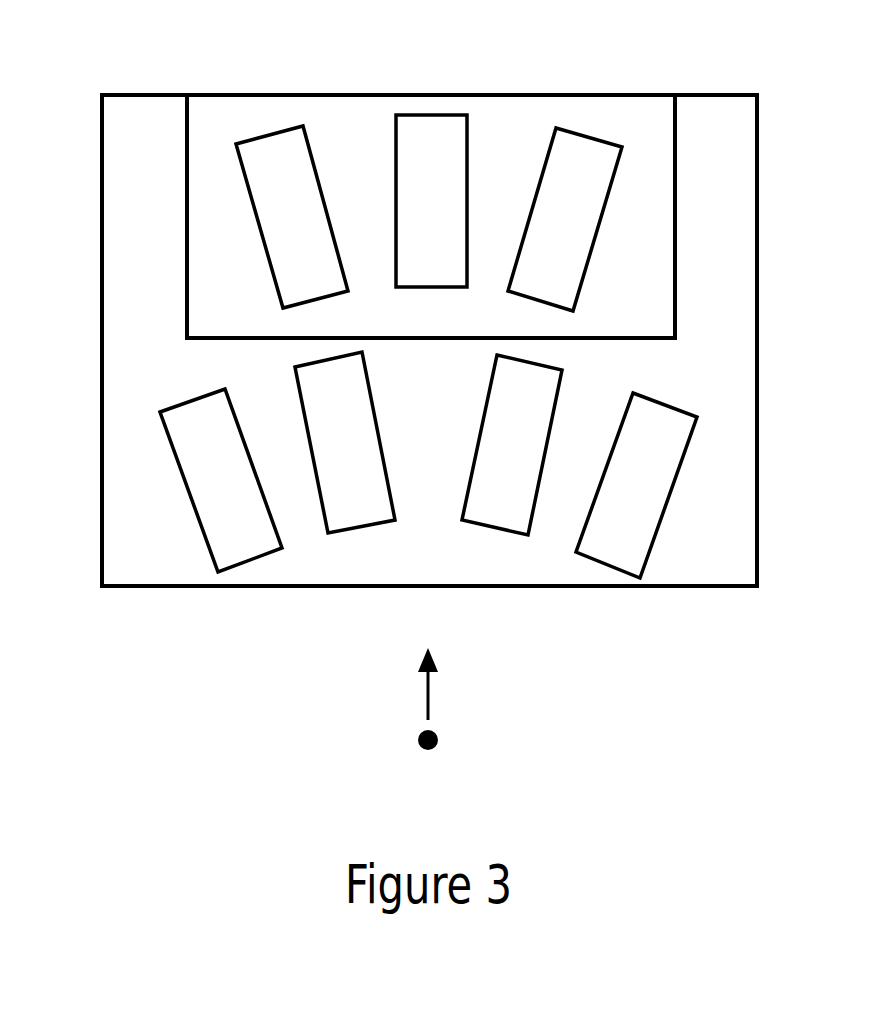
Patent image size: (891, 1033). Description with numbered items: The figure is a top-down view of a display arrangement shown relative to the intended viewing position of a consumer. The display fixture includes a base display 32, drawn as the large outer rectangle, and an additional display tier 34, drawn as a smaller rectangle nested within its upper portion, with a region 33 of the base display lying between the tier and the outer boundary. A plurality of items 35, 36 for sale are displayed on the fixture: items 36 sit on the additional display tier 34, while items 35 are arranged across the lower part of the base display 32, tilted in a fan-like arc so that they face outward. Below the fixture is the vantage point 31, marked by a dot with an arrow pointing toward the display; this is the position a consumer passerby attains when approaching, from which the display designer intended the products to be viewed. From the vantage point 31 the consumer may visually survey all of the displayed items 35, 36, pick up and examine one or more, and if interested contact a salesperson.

The vantage point 31 is at (437, 738).
The base display 32 is at (757, 445).
The gap region between housing and inner chamber 33 is at (720, 250).
The additional display tier 34 is at (633, 112).
The item 35 is at (218, 508).
The item 36 is at (268, 165).